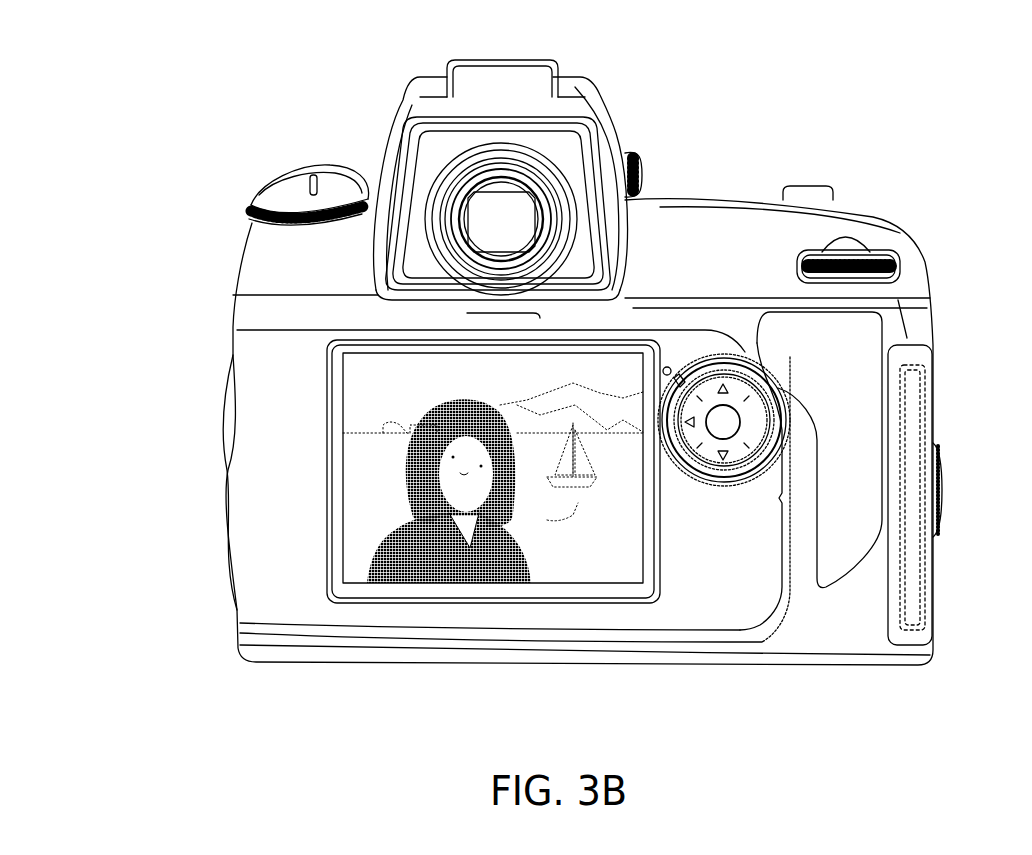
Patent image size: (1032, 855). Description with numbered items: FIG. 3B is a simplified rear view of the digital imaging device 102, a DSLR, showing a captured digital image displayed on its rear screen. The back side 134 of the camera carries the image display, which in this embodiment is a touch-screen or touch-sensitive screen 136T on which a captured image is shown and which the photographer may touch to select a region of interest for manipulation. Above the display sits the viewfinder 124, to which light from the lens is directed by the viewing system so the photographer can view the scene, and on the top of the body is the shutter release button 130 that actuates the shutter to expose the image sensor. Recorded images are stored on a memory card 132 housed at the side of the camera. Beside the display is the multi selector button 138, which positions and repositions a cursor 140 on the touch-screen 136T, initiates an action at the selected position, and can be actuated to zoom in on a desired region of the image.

The digital imaging device 102 is at (241, 682).
The viewfinder 124 is at (483, 237).
The shutter release button 130 is at (812, 186).
The memory card 132 is at (905, 578).
The back side 134 is at (825, 630).
The touch-screen display 136T is at (603, 557).
The multi selector button 138 is at (755, 421).
The cursor 140 is at (463, 474).